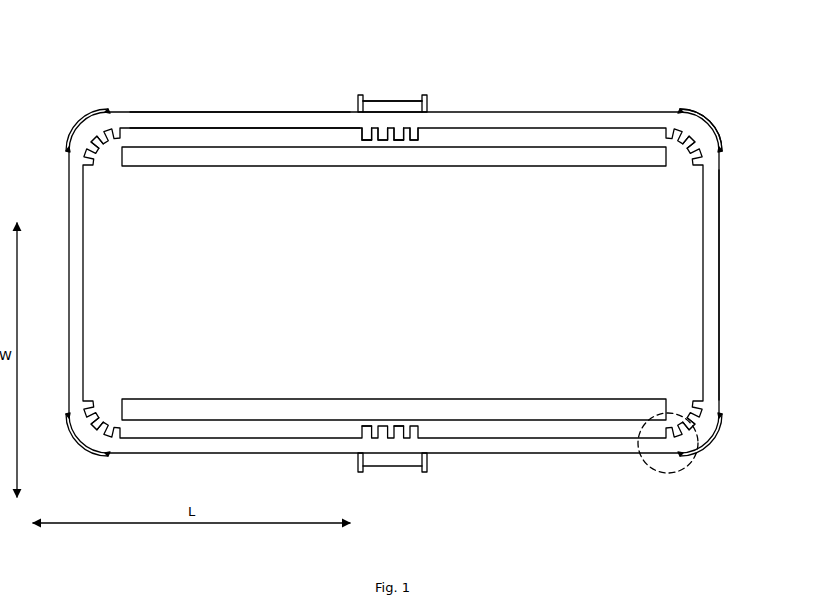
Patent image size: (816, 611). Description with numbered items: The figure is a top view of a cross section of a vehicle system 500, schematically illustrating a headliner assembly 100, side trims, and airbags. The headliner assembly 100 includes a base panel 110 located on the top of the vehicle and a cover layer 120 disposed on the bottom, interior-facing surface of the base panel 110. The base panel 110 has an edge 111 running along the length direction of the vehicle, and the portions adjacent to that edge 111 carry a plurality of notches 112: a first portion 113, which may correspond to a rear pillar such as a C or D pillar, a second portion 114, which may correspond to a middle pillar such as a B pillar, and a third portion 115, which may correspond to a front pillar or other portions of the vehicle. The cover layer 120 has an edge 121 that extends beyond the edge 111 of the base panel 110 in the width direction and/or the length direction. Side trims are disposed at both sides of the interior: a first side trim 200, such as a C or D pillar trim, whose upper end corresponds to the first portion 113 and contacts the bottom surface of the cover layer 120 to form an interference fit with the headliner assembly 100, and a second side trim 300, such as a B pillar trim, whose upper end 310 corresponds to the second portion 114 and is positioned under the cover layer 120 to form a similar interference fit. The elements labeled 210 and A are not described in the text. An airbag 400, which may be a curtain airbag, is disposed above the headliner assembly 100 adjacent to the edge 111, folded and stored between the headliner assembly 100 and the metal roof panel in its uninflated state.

The vehicle system 500 is at (147, 56).
The headliner assembly 100 is at (204, 108).
The base panel 110 is at (683, 312).
The edge 111 is at (565, 128).
The edge 121 is at (632, 112).
The cover layer 120 is at (708, 250).
The notches 112 is at (408, 141).
The first portion 113 is at (688, 170).
The second portion 114 is at (390, 148).
The third portion 115 is at (104, 170).
The airbag 400 is at (211, 160).
The second side trim 300 is at (427, 100).
The upper end 310 is at (382, 105).
The first side trim 200 is at (722, 137).
The cap arc 210 is at (706, 125).
The detail region A is at (652, 462).